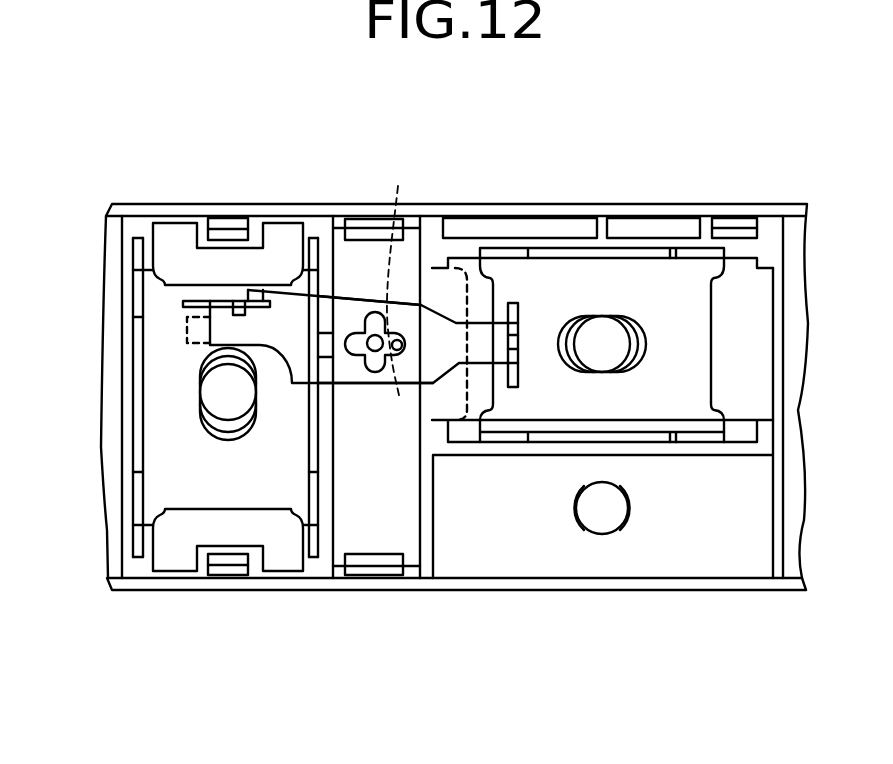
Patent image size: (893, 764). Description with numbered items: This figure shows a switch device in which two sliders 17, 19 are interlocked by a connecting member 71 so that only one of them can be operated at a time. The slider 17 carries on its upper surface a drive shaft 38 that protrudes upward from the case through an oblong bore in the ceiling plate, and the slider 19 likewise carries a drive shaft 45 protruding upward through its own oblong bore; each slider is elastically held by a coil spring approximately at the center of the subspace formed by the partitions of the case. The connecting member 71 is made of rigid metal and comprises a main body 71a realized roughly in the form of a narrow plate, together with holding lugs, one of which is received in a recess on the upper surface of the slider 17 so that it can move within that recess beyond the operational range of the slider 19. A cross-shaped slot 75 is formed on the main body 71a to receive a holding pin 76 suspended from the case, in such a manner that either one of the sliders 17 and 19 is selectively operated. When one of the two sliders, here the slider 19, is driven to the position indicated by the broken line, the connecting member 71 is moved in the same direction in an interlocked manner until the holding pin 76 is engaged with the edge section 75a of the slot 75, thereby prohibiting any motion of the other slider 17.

The slider 17 is at (176, 527).
The slider 19 is at (714, 292).
The drive shaft 38 is at (212, 394).
The drive shaft 45 is at (605, 325).
The connecting member 71 is at (400, 294).
The main body 71a is at (345, 318).
The cross-shaped slot 75 is at (375, 348).
The edge section 75a is at (398, 352).
The holding pin 76 is at (392, 605).